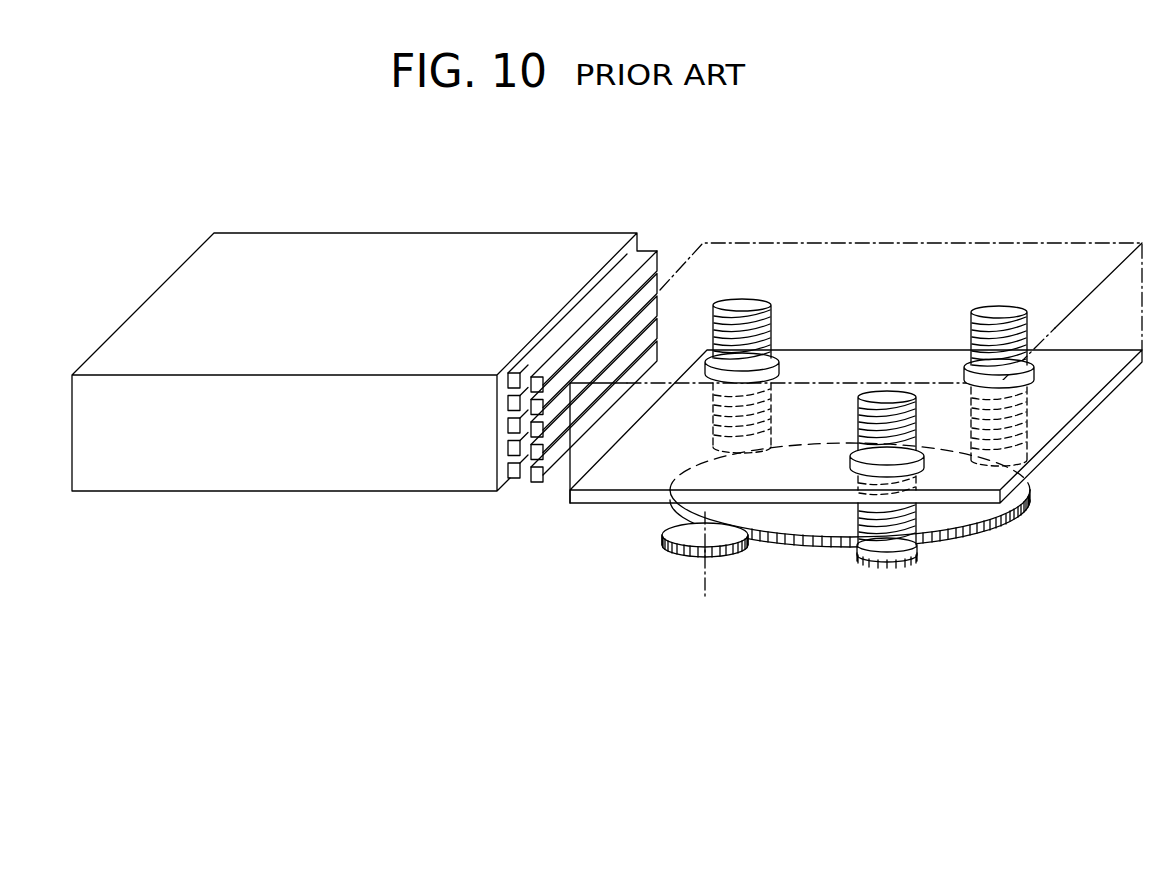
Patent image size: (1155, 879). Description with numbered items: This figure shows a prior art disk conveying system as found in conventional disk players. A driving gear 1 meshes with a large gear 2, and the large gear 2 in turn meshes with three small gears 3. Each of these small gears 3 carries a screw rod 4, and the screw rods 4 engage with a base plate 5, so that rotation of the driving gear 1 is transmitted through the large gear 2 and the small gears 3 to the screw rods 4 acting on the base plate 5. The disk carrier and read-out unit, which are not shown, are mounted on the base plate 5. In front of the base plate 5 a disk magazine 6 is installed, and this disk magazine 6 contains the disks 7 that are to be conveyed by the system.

The driving gear 1 is at (677, 558).
The large gear 2 is at (818, 520).
The small gears 3 is at (1030, 451).
The screw rod 4 is at (752, 305).
The base plate 5 is at (603, 477).
The disk magazine 6 is at (484, 233).
The disks 7 is at (652, 292).